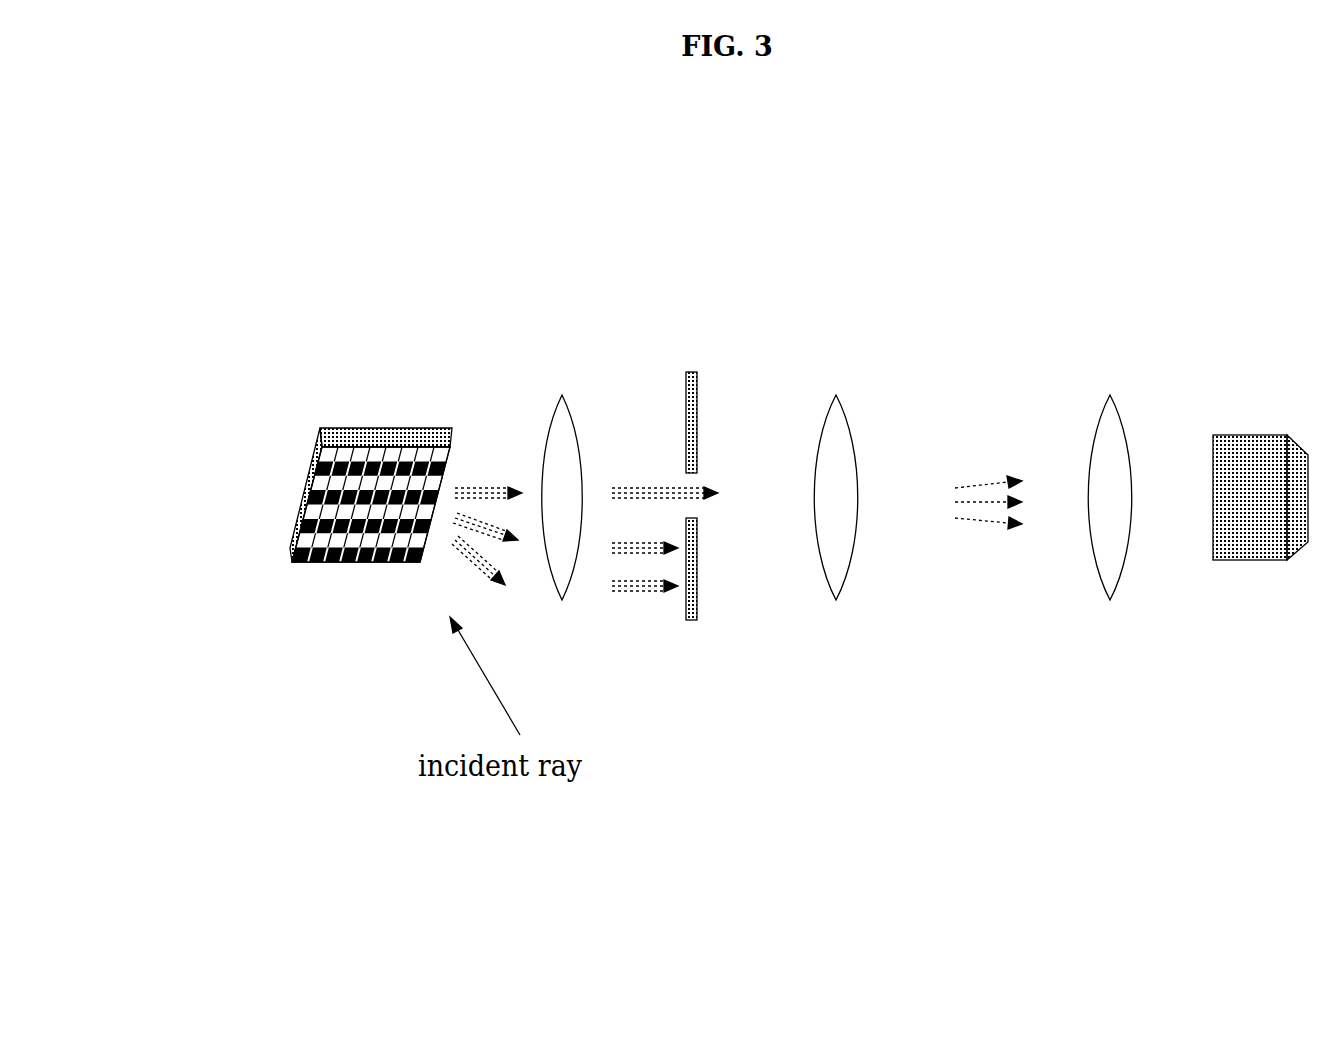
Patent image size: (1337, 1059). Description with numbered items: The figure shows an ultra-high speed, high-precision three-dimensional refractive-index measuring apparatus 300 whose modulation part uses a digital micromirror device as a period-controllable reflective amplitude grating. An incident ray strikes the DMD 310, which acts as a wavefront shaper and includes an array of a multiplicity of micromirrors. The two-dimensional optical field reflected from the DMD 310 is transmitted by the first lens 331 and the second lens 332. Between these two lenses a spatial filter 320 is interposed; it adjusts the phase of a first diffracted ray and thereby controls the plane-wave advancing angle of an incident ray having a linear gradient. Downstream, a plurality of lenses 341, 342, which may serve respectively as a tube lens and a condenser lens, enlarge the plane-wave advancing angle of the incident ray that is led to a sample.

The optical system 300 is at (250, 352).
The DMD 310 is at (400, 428).
The spatial filter 320 is at (691, 372).
The first lens 331 is at (562, 598).
The second lens 332 is at (836, 600).
The lens 341 is at (1110, 600).
The lens 342 is at (1235, 435).